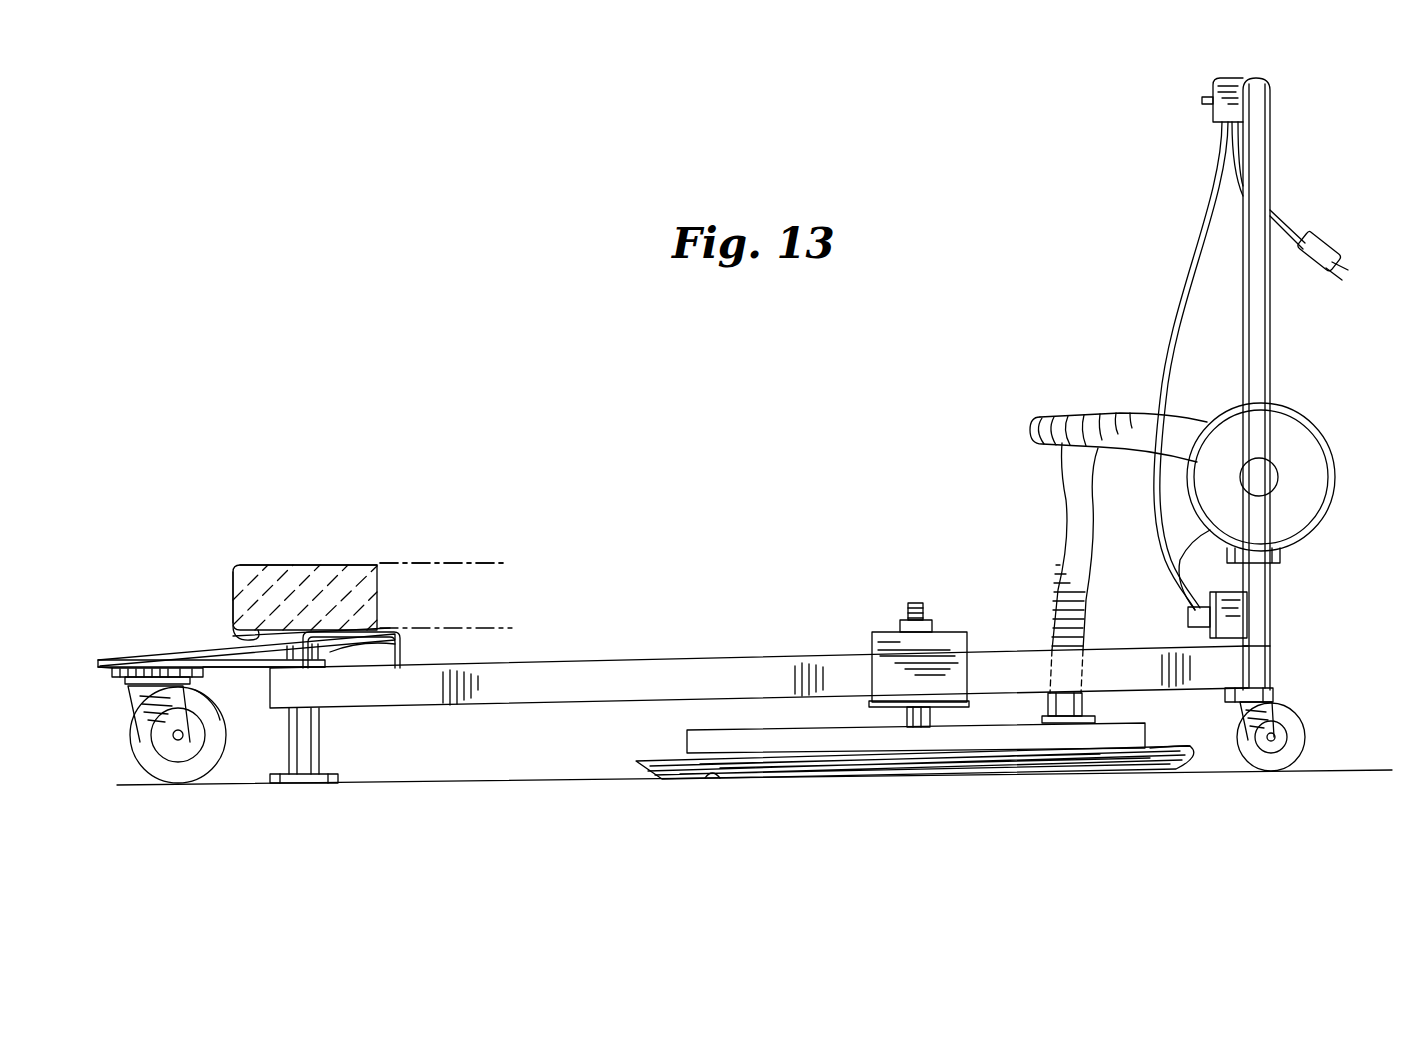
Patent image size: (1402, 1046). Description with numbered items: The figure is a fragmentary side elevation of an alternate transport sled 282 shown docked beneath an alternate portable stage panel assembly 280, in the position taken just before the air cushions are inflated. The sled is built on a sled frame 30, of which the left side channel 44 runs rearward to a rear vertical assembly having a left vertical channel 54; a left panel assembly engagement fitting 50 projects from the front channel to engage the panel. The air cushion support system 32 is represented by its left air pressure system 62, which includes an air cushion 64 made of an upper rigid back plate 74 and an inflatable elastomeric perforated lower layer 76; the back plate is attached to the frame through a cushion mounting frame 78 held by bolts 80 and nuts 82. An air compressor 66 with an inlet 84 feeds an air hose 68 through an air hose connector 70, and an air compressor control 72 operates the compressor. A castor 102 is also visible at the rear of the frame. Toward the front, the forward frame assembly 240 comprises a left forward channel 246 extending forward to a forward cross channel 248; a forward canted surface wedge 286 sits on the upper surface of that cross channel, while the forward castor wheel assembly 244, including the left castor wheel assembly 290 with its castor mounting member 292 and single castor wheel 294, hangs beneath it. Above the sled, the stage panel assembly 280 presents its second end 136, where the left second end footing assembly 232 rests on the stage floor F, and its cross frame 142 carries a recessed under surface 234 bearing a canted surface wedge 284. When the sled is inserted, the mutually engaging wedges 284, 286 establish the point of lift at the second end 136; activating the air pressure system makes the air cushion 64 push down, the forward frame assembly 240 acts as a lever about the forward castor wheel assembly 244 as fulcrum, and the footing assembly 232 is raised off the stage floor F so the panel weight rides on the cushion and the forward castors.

The sled frame 30 is at (784, 652).
The air cushion support system 32 is at (1205, 408).
The left side channel 44 is at (1098, 652).
The left panel assembly engagement fitting 50 is at (968, 706).
The left vertical channel 54 is at (1272, 274).
The left air pressure system 62 is at (1291, 471).
The air cushion 64 is at (1218, 728).
The air compressor 66 is at (1302, 414).
The air hose 68 is at (1060, 420).
The air hose connector 70 is at (1090, 708).
The air compressor control 72 is at (1212, 110).
The upper rigid back plate 74 is at (662, 764).
The inflatable elastomeric perforated lower layer 76 is at (714, 777).
The cushion mounting frame 78 is at (698, 733).
The bolt 80 is at (924, 606).
The nut 82 is at (934, 629).
The inlet 84 is at (1280, 470).
The rear caster 102 is at (1290, 726).
The second end 136 is at (233, 566).
The cross frame 142 is at (232, 568).
The left second end footing assembly 232 is at (340, 780).
The recessed under surface 234 is at (233, 628).
The forward frame assembly 240 is at (654, 660).
The forward castor wheel assembly 244 is at (284, 629).
The left forward channel 246 is at (544, 668).
The forward cross channel 248 is at (400, 649).
The stage panel assembly 280 is at (420, 538).
The transport sled 282 is at (912, 458).
The canted surface wedge 284 is at (222, 636).
The forward canted surface wedge 286 is at (200, 657).
The left castor wheel assembly 290 is at (142, 762).
The castor mounting member 292 is at (143, 705).
The castor wheel 294 is at (130, 806).
The stage floor F is at (448, 784).